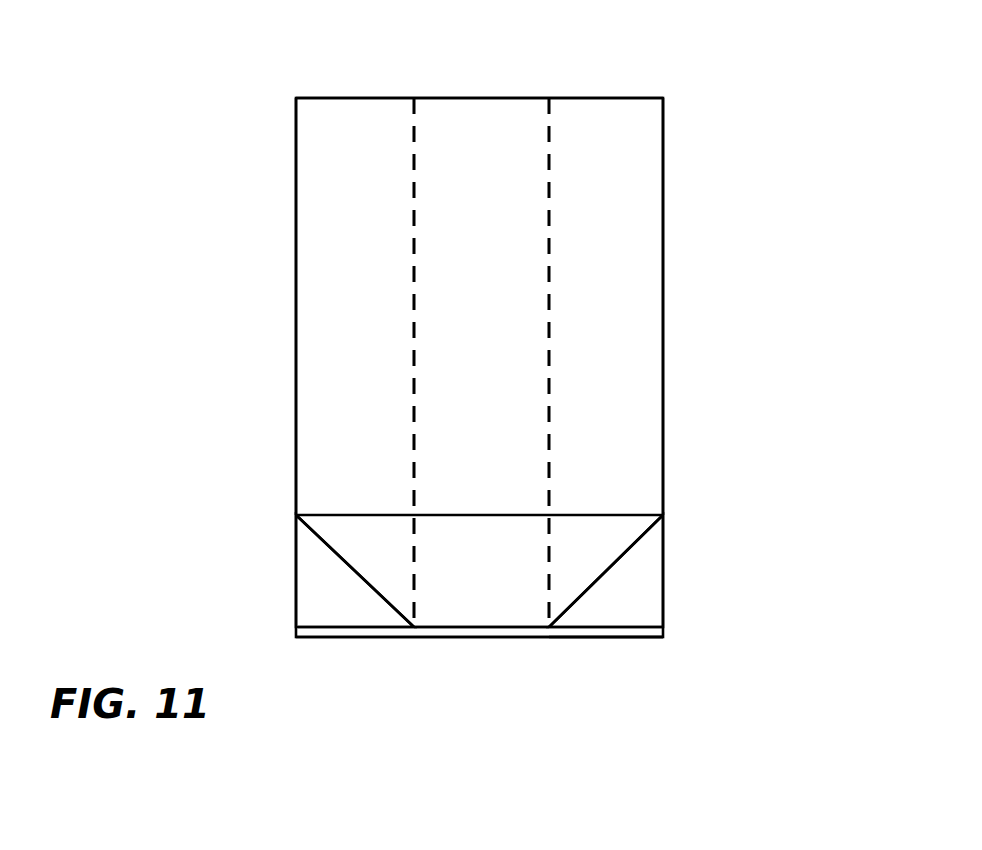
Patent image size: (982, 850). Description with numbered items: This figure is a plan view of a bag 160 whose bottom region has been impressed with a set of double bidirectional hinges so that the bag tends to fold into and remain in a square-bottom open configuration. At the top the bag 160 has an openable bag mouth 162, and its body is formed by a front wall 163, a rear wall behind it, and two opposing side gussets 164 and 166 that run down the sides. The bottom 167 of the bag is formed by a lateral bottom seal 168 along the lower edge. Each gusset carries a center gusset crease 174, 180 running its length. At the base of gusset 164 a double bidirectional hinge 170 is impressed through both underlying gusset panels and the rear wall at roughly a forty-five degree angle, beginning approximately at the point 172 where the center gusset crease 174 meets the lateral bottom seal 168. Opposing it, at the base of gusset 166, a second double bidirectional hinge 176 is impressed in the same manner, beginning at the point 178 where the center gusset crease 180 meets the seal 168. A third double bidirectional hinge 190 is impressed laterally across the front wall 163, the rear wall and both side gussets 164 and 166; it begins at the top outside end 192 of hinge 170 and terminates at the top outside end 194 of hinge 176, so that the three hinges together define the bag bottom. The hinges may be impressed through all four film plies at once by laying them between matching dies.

The bag 160 is at (665, 260).
The openable bag mouth 162 is at (505, 98).
The front wall 163 is at (512, 298).
The side gusset 164 is at (320, 250).
The side gusset 166 is at (637, 358).
The bottom 167 is at (493, 640).
The lateral bottom seal 168 is at (527, 627).
The double bidirectional hinge 170 is at (337, 557).
The point 172 is at (407, 632).
The center gusset crease 174 is at (414, 423).
The double bidirectional hinge 176 is at (620, 562).
The point 178 is at (557, 632).
The center gusset crease 180 is at (552, 497).
The double bidirectional hinge 190 is at (507, 515).
The top outside end 192 is at (297, 515).
The top outside end 194 is at (663, 517).